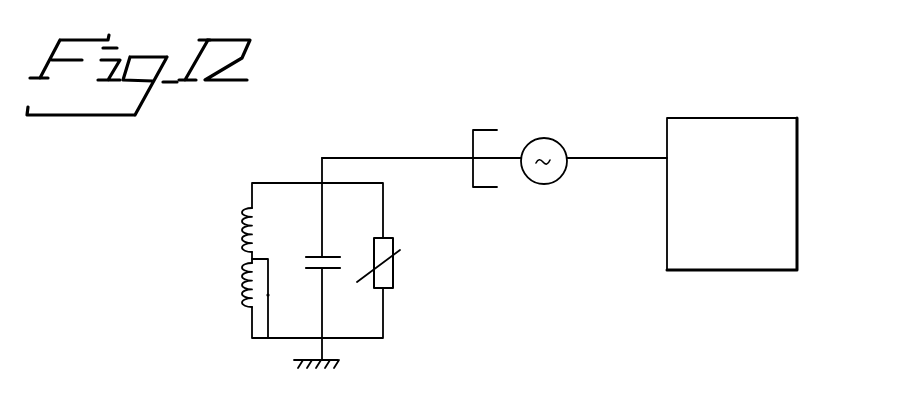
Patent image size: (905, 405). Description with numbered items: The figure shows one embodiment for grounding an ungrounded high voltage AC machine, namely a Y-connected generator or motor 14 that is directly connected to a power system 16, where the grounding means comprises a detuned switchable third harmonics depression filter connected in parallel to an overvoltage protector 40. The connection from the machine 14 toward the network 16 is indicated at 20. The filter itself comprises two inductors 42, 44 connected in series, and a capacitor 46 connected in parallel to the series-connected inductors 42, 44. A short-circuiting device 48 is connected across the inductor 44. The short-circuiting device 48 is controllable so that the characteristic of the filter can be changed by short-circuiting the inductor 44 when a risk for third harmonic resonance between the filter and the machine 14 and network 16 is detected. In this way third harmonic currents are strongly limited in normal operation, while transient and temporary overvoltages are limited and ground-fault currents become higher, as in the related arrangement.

The Y-connected generator or motor 14 is at (547, 153).
The power system 16 is at (782, 160).
The transmission line / coupling 20 is at (472, 155).
The overvoltage protector 40 is at (398, 276).
The inductor 42 is at (233, 233).
The inductor 44 is at (237, 287).
The capacitor 46 is at (315, 255).
The short-circuiting device 48 is at (279, 302).